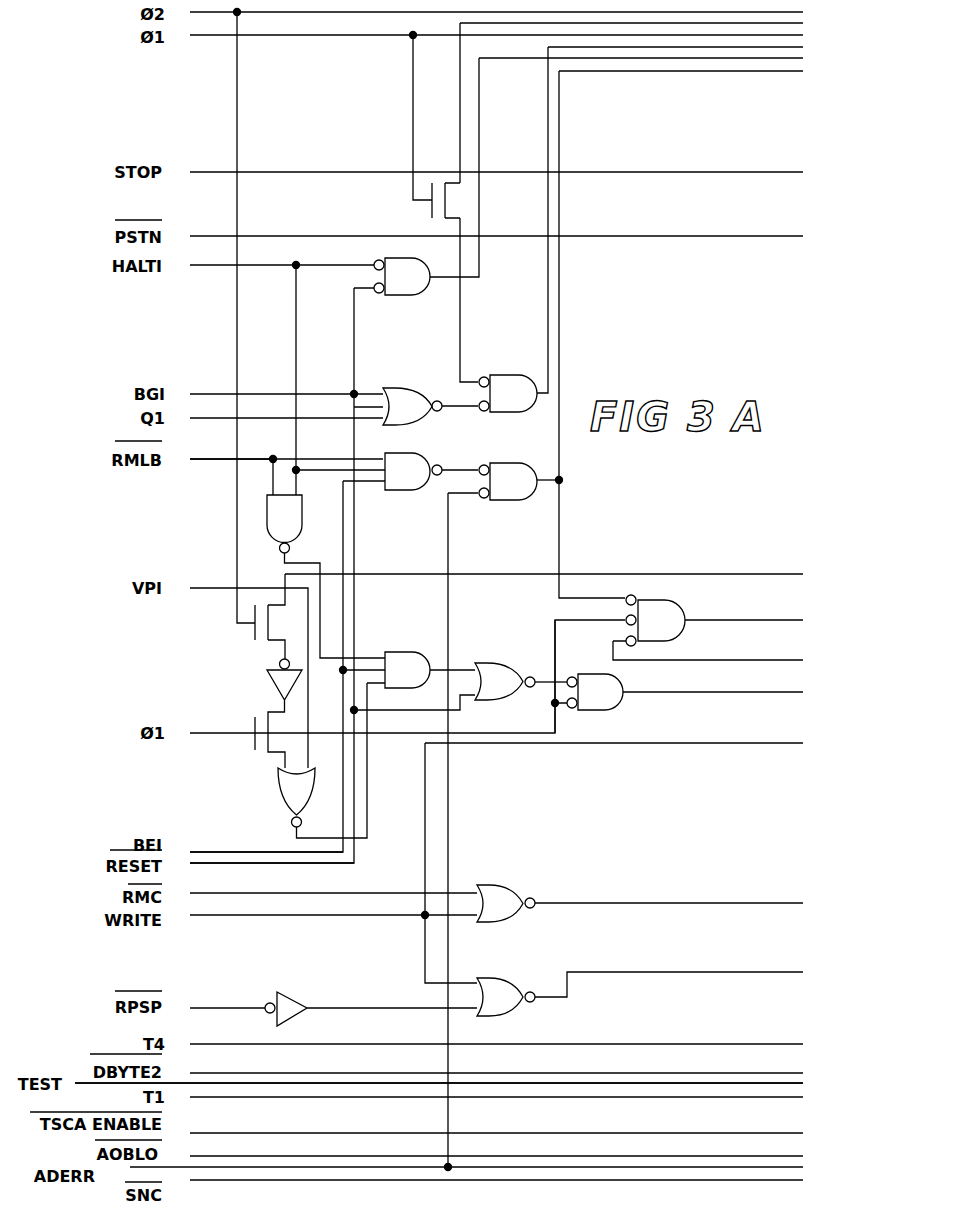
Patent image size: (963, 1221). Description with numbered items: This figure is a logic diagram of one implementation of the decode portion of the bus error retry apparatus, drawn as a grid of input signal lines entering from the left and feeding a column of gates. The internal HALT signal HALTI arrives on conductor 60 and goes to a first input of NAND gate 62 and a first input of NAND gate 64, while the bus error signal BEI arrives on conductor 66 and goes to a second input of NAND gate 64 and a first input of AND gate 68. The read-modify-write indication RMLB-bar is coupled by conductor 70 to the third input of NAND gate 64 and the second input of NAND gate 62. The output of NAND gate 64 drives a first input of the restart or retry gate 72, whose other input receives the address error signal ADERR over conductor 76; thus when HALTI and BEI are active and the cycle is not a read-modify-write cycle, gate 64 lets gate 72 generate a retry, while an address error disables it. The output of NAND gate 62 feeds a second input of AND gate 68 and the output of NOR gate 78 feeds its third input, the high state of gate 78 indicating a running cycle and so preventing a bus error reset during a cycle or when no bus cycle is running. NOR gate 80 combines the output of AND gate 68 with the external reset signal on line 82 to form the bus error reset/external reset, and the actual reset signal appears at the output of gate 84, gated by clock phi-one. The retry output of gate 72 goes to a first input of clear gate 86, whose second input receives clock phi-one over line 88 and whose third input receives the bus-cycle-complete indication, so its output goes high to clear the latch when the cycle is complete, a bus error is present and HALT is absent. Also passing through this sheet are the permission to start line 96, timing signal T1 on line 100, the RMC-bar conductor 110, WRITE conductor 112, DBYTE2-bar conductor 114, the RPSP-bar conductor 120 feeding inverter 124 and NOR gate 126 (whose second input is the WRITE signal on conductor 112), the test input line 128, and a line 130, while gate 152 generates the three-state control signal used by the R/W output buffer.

The conductor 60 is at (347, 260).
The NAND gate 62 is at (302, 517).
The NAND gate 64 is at (418, 453).
The conductor 66 is at (250, 846).
The AND gate 68 is at (410, 649).
The conductor 70 is at (247, 458).
The retry gate 72 is at (527, 503).
The conductor 76 is at (450, 955).
The NOR gate 78 is at (278, 788).
The NOR gate 80 is at (500, 698).
The line 82 is at (248, 865).
The gate 84 is at (620, 711).
The clear gate 86 is at (675, 633).
The line 88 is at (555, 641).
The line 96 is at (696, 231).
The line 100 is at (256, 1098).
The conductor 110 is at (355, 893).
The conductor 112 is at (266, 918).
The conductor 114 is at (380, 1070).
The conductor 120 is at (223, 1005).
The inverter 124 is at (371, 997).
The NOR gate 126 is at (515, 978).
The line 128 is at (410, 1084).
The T4 input line 130 is at (562, 1046).
The gate 152 is at (517, 375).